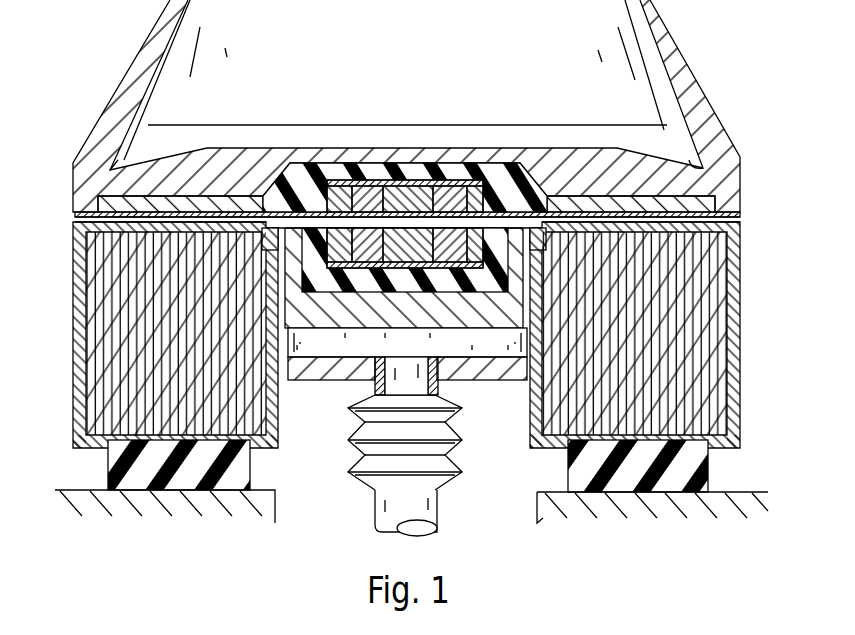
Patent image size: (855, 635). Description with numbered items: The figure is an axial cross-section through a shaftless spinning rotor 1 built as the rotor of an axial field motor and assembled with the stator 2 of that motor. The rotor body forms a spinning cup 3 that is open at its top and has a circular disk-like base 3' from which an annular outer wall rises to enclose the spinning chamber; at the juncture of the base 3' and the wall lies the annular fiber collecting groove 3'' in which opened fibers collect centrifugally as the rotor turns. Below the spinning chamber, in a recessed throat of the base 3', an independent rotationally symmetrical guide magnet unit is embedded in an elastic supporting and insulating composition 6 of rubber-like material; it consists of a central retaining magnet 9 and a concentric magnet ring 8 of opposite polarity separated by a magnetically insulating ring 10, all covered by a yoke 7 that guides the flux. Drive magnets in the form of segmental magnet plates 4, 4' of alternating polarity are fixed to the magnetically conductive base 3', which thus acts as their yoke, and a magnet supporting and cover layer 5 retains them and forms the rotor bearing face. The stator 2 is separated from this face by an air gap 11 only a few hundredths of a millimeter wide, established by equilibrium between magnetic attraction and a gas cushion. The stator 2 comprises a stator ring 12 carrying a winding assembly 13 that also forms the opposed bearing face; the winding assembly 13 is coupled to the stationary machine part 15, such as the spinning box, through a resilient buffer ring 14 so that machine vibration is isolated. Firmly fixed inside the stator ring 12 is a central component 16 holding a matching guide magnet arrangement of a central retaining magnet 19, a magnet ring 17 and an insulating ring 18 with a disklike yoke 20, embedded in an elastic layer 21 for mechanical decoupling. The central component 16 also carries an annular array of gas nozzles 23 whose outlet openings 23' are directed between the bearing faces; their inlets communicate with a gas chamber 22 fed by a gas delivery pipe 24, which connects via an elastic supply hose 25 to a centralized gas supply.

The shaftless spinning rotor 1 is at (414, 280).
The stator 2 is at (416, 295).
The spinning cup 3 is at (406, 106).
The base 3' is at (413, 147).
The fiber collecting groove 3'' is at (436, 134).
The segmental magnet plate 4 is at (426, 178).
The segmental magnet plate 4' is at (406, 154).
The magnet supporting and cover layer 5 is at (740, 208).
The elastic supporting and insulating composition 6 is at (500, 177).
The yoke 7 is at (407, 180).
The magnet ring 8 is at (340, 175).
The central retaining magnet 9 is at (423, 168).
The magnetically insulating ring 10 is at (448, 180).
The air gap 11 is at (740, 220).
The stator ring 12 is at (700, 287).
The winding assembly 13 is at (733, 425).
The resilient buffer ring 14 is at (707, 472).
The stationary machine part 15 is at (733, 503).
The central component 16 is at (498, 388).
The magnet ring 17 is at (320, 270).
The insulating ring 18 is at (375, 270).
The central retaining magnet 19 is at (412, 270).
The yoke 20 is at (445, 270).
The elastic layer 21 is at (313, 335).
The gas chamber 22 is at (477, 345).
The gas nozzle 23 is at (403, 174).
The outlet opening 23' is at (410, 207).
The gas delivery pipe 24 is at (375, 387).
The elastic supply hose 25 is at (377, 490).